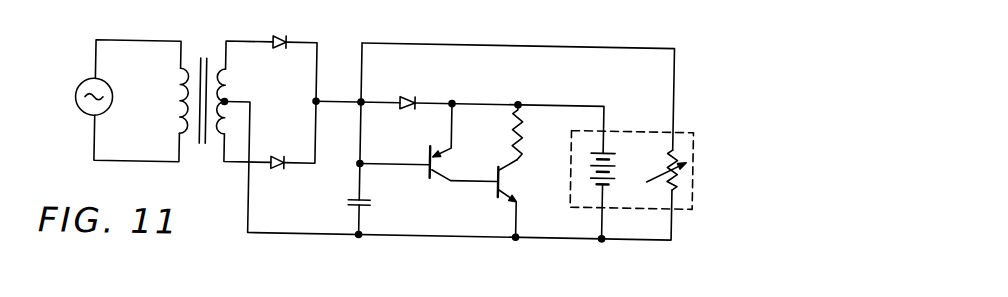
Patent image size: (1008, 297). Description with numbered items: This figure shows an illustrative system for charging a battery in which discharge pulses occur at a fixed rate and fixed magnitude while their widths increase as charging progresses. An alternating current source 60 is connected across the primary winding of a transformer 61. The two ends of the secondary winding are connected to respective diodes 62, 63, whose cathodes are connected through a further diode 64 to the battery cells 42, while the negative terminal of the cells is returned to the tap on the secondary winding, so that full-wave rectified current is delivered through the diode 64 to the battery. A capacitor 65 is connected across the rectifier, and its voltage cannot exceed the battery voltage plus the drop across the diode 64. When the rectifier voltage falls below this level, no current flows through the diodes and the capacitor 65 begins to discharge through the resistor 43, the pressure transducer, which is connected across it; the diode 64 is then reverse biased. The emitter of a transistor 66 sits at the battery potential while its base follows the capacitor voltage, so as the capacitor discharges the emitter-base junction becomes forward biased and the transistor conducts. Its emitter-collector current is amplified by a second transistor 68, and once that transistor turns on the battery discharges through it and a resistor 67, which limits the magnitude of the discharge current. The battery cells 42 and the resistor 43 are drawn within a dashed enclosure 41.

The alternating current source 60 is at (76, 102).
The transformer 61 is at (203, 55).
The diode 62 is at (284, 39).
The diode 63 is at (279, 157).
The diode 64 is at (407, 95).
The capacitor 65 is at (373, 202).
The transistor 66 is at (441, 157).
The resistor 67 is at (523, 140).
The transistor 68 is at (510, 192).
The sensor unit 41 is at (688, 124).
The battery cells 42 is at (617, 168).
The resistor 43 is at (666, 160).